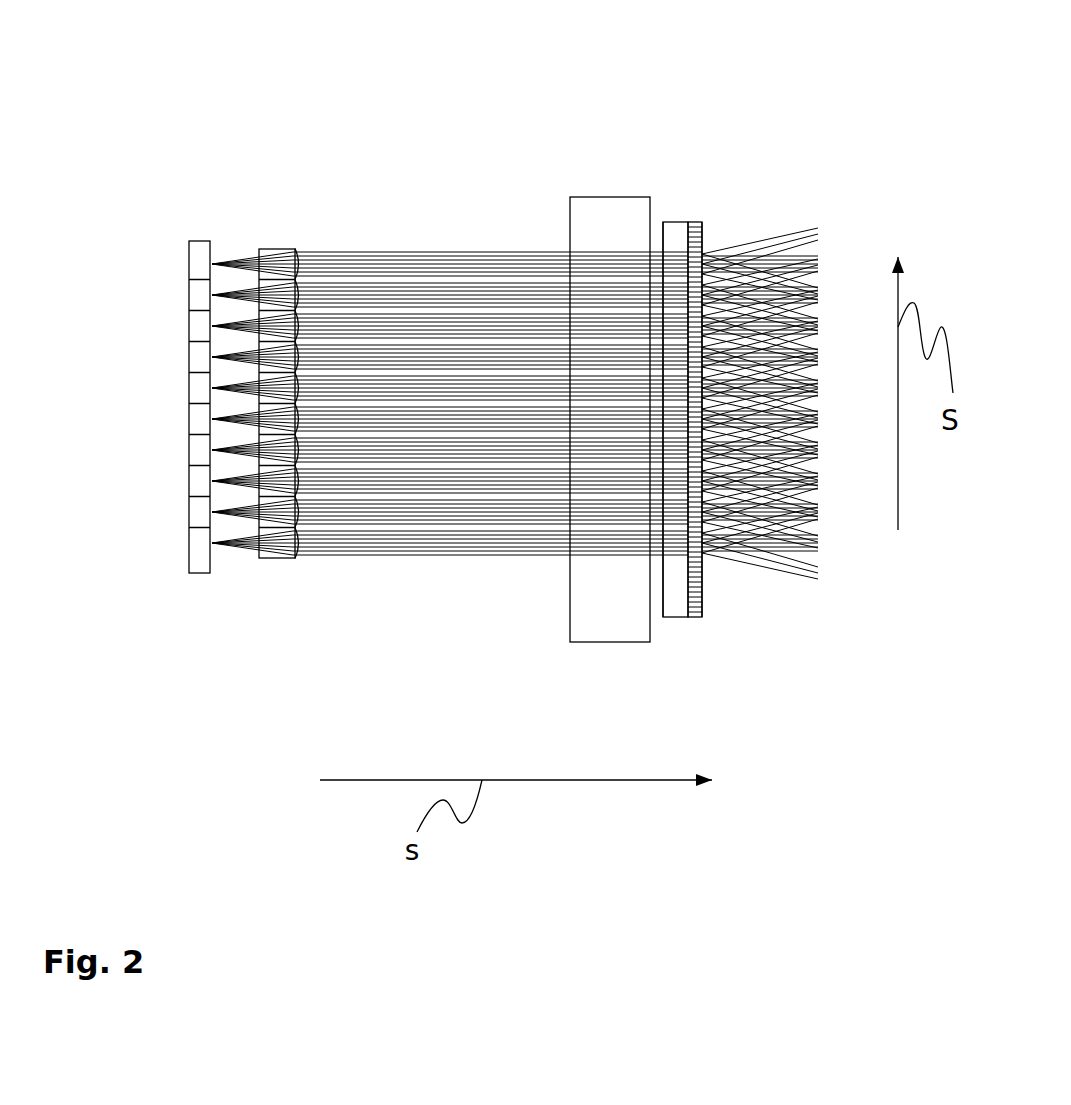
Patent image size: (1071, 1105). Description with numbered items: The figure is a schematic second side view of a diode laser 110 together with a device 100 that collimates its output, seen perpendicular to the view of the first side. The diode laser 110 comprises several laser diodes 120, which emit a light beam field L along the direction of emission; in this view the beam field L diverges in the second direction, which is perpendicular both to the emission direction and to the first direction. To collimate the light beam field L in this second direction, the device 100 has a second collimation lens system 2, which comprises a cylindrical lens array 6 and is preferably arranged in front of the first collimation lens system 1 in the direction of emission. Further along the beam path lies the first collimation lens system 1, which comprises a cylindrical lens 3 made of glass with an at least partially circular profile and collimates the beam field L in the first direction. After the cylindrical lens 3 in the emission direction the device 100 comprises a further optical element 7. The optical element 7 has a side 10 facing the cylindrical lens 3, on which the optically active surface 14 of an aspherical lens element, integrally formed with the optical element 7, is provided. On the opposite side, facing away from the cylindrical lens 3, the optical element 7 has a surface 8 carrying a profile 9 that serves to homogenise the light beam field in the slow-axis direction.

The device 100 is at (390, 98).
The diode laser 110 is at (210, 123).
The laser diodes 120 is at (200, 553).
The second collimation lens system 2 is at (277, 230).
The cylindrical lens array 6 is at (303, 298).
The light beam field L is at (417, 285).
The first collimation lens system 1 is at (582, 180).
The cylindrical lens 3 is at (587, 577).
The optically active surface 14 is at (662, 238).
The side 10 is at (662, 575).
The optical element 7 is at (680, 240).
The surface 8 is at (705, 237).
The profile 9 is at (703, 567).